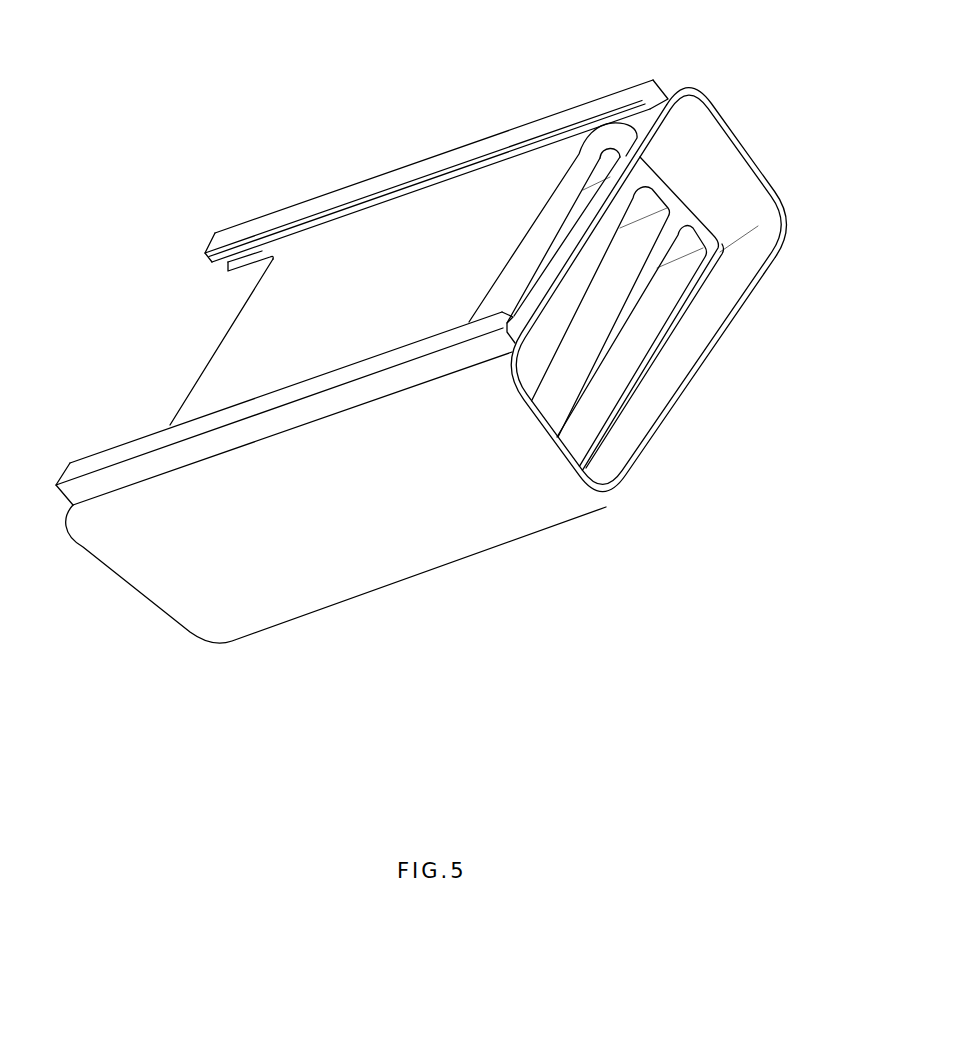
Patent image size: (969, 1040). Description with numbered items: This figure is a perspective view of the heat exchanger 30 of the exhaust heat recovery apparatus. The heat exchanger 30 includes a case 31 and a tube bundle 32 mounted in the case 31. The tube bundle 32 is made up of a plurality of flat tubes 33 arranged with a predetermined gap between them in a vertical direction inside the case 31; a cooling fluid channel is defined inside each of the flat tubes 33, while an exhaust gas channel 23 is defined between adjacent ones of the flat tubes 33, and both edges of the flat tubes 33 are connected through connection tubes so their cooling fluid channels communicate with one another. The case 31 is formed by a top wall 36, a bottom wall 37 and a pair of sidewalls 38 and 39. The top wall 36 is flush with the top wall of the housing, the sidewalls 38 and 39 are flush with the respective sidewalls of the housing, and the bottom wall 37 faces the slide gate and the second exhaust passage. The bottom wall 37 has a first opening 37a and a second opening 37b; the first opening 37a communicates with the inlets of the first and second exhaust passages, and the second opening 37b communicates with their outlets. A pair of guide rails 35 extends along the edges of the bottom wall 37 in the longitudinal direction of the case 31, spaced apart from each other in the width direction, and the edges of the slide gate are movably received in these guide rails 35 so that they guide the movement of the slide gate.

The heat exchanger 30 is at (196, 67).
The case 31 is at (446, 580).
The tube bundle 32 is at (718, 229).
The flat tubes 33 is at (571, 190).
The guide rails 35 is at (400, 166).
The top wall 36 is at (650, 455).
The bottom wall 37 is at (347, 247).
The first opening 37a is at (209, 363).
The second opening 37b is at (606, 137).
The sidewall 38 is at (760, 162).
The sidewall 39 is at (345, 585).
The exhaust gas channel 23 is at (554, 250).